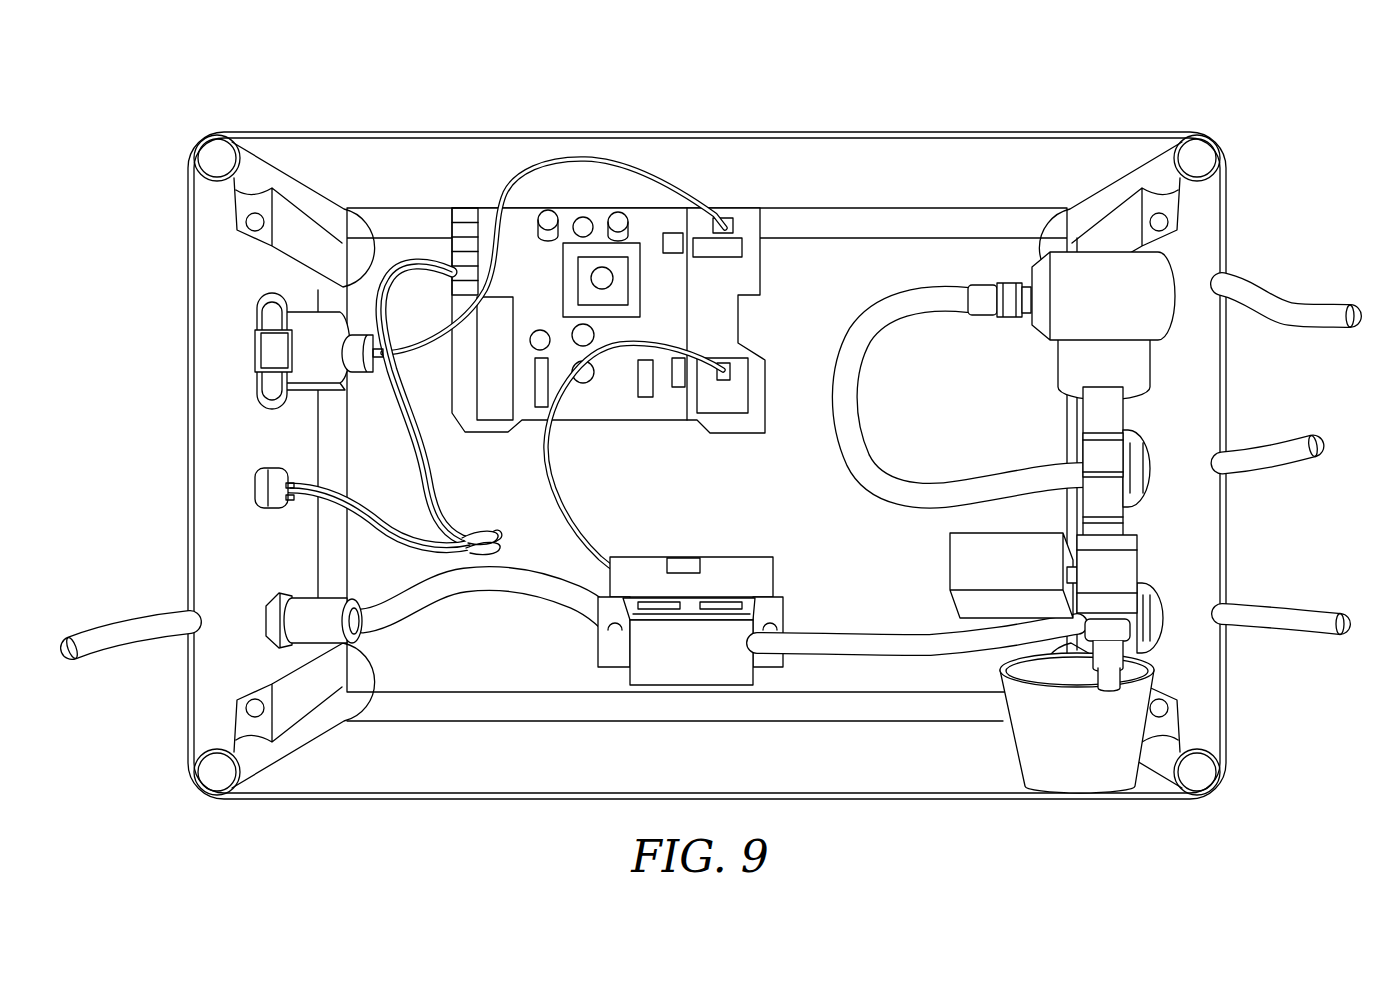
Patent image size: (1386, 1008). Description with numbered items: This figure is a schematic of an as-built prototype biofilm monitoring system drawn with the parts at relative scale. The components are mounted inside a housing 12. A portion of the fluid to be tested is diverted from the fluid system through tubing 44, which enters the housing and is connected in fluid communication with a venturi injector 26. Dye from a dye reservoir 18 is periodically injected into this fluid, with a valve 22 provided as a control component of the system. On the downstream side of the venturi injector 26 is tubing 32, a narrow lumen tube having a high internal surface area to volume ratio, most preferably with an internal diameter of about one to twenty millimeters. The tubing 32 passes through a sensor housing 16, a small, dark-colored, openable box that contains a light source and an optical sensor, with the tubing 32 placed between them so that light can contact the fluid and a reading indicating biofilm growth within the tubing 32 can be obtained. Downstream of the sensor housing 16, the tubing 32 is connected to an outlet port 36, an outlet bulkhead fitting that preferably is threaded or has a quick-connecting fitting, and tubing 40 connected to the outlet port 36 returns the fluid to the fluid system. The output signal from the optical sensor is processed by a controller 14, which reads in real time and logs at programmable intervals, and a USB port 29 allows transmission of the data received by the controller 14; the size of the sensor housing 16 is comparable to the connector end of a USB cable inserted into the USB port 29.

The housing 12 is at (385, 135).
The controller 14 is at (747, 223).
The sensor housing 16 is at (660, 668).
The dye reservoir 18 is at (1045, 745).
The valve 22 is at (1117, 572).
The venturi injector 26 is at (1147, 293).
The USB port 29 is at (275, 351).
The tubing 32 is at (908, 318).
The outlet port 36 is at (312, 613).
The tubing 40 is at (104, 642).
The tubing 44 is at (1283, 318).